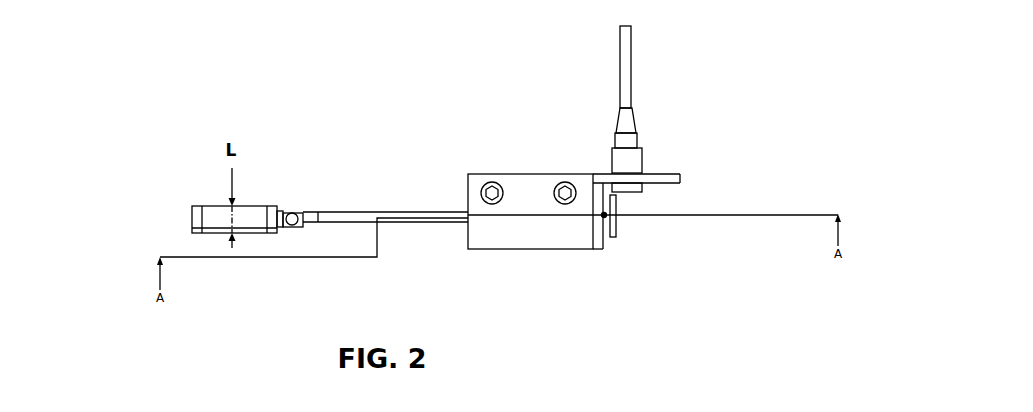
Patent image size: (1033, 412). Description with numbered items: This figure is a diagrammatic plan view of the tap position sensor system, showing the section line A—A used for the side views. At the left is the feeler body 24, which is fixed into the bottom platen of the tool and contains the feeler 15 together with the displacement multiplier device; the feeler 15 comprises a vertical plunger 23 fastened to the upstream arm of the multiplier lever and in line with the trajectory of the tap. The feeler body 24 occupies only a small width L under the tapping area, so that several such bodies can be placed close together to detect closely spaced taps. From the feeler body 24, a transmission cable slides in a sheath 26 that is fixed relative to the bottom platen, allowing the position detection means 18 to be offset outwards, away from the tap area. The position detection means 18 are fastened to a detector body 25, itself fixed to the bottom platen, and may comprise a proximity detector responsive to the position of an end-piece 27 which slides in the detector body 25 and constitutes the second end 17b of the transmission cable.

The feeler 15 is at (170, 215).
The feeler body 24 is at (212, 215).
The vertical plunger 23 is at (292, 213).
The sheath 26 is at (360, 212).
The detector body 25 is at (534, 193).
The position detection means 18 is at (642, 157).
The end-piece 27 is at (603, 227).
The second end 17b is at (617, 230).